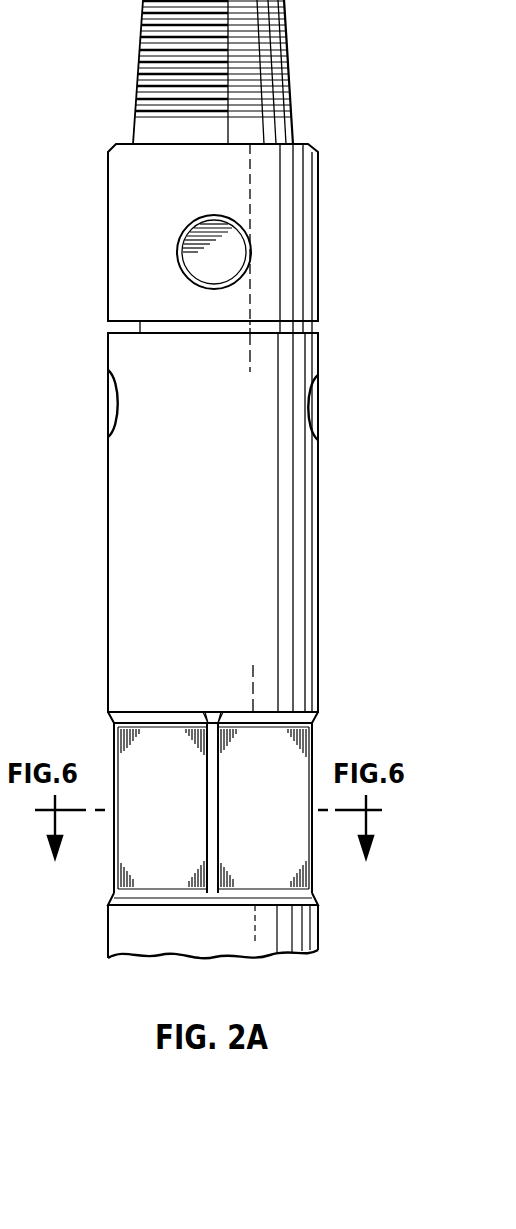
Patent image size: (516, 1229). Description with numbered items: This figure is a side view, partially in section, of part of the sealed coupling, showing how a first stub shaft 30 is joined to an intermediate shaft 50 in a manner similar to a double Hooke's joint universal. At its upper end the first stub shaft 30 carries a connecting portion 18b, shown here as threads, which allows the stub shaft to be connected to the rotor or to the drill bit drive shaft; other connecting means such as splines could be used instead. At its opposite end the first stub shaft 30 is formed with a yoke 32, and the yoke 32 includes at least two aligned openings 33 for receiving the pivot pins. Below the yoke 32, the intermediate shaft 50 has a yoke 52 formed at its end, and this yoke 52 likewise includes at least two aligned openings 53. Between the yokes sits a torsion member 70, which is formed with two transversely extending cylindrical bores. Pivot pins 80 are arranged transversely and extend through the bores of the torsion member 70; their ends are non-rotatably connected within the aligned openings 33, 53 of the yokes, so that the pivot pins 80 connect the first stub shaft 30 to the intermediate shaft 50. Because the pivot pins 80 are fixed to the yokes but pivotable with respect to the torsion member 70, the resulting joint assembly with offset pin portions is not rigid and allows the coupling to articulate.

The connecting portion 18b is at (285, 34).
The first stub shaft 30 is at (282, 133).
The yoke 32 is at (290, 306).
The aligned openings 33 is at (203, 217).
The intermediate shaft 50 is at (287, 519).
The yoke 52 is at (298, 370).
The aligned openings 53 is at (108, 380).
The torsion member 70 is at (140, 328).
The pivot pins 80 is at (228, 242).